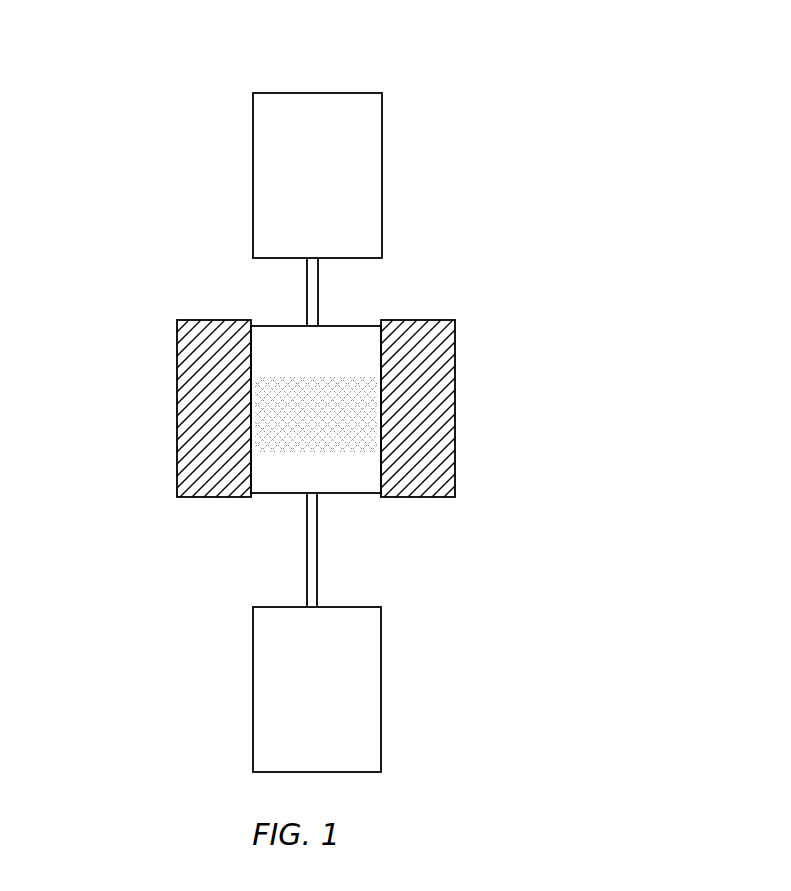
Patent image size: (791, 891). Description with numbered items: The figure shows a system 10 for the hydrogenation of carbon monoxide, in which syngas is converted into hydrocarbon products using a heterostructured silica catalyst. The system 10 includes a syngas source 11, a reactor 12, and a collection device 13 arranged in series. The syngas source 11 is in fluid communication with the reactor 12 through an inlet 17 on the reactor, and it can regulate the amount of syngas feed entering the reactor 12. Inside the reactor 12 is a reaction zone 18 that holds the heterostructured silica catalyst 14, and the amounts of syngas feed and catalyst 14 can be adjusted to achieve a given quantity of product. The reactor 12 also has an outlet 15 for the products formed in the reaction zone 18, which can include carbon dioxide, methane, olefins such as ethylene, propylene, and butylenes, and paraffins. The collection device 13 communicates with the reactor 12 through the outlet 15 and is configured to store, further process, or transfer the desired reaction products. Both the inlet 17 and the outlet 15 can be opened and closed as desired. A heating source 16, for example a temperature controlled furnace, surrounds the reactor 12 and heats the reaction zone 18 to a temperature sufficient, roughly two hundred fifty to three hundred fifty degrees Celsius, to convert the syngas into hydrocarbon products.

The system 10 is at (416, 108).
The syngas source 11 is at (306, 186).
The reactor 12 is at (266, 325).
The collection device 13 is at (306, 683).
The heterostructured silica catalyst 14 is at (303, 423).
The outlet 15 is at (307, 493).
The heating source 16 is at (177, 408).
The inlet 17 is at (323, 325).
The reaction zone 18 is at (318, 377).